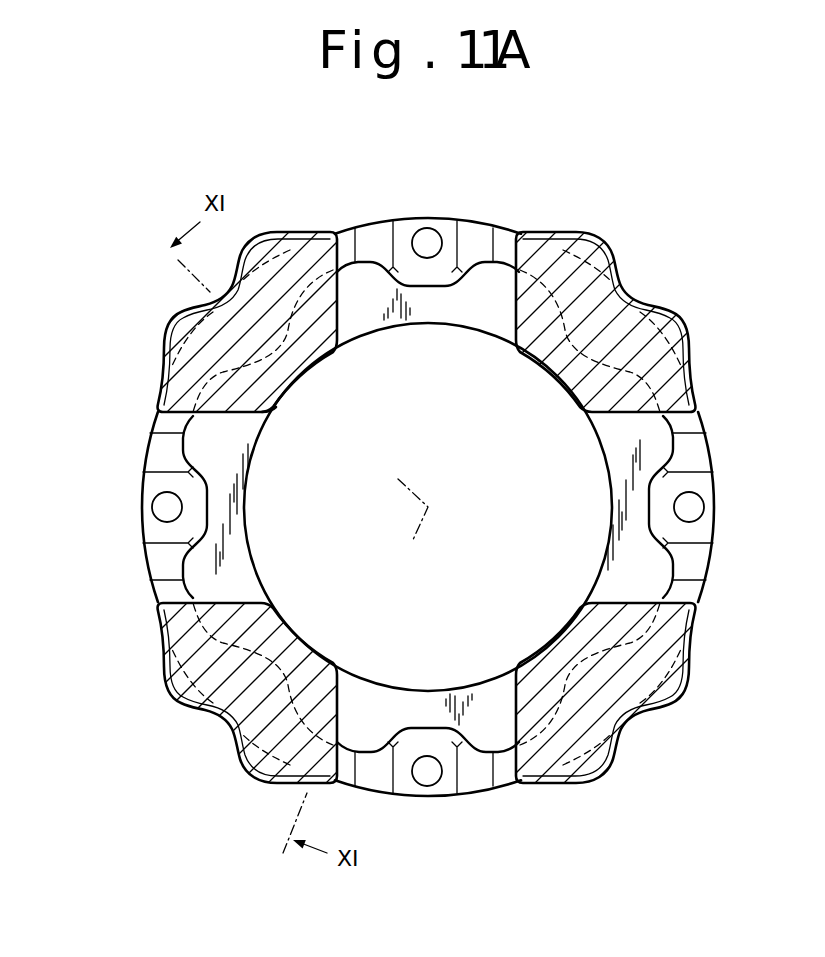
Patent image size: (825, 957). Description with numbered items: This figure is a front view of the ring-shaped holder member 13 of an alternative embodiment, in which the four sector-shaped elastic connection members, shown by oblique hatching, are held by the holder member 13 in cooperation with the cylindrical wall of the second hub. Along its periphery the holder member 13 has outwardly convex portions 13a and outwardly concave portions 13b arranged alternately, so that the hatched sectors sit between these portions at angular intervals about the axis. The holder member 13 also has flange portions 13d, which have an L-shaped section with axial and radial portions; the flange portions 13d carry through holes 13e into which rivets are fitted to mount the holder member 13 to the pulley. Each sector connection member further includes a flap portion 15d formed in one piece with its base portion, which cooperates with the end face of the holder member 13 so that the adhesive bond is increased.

The holder member 13 is at (706, 335).
The outwardly convex portion 13a is at (507, 258).
The outwardly concave portion 13b is at (555, 375).
The flange portion 13d is at (405, 222).
The through hole 13e is at (430, 236).
The flap portion 15d is at (273, 385).